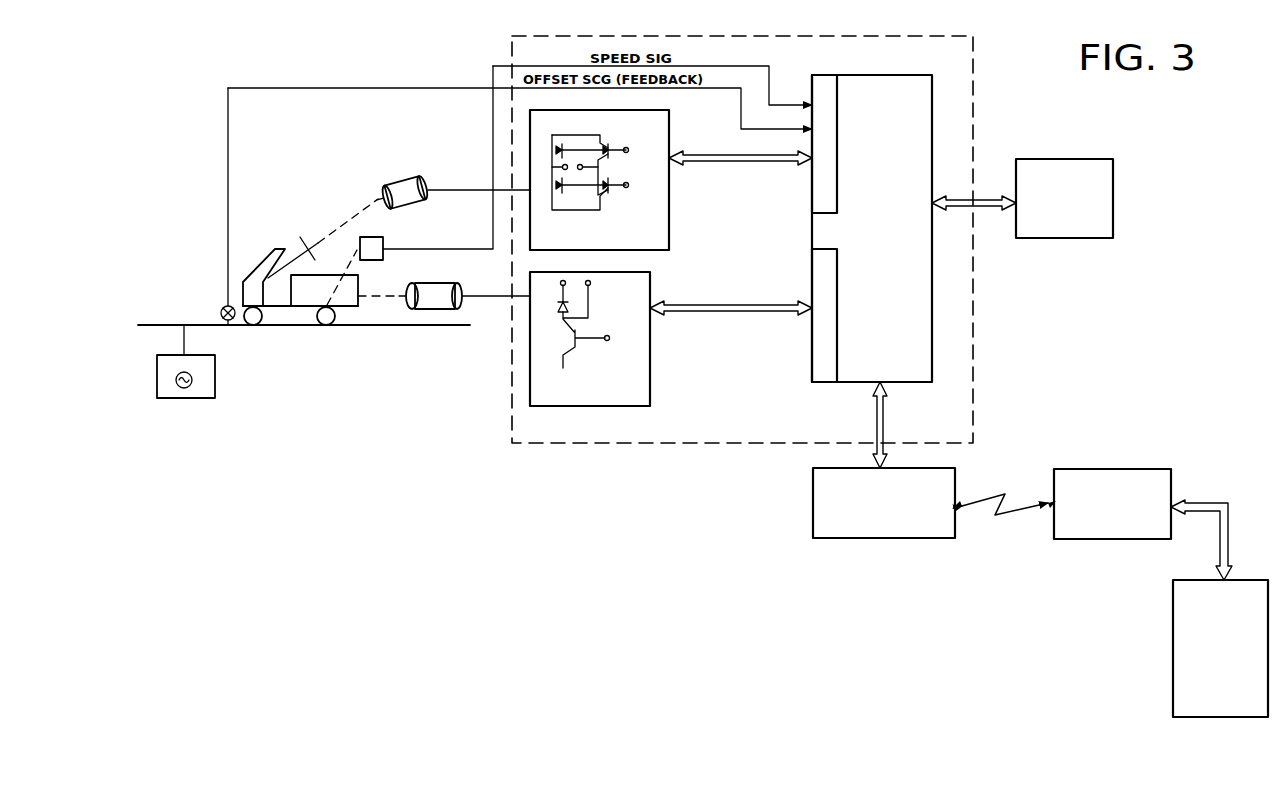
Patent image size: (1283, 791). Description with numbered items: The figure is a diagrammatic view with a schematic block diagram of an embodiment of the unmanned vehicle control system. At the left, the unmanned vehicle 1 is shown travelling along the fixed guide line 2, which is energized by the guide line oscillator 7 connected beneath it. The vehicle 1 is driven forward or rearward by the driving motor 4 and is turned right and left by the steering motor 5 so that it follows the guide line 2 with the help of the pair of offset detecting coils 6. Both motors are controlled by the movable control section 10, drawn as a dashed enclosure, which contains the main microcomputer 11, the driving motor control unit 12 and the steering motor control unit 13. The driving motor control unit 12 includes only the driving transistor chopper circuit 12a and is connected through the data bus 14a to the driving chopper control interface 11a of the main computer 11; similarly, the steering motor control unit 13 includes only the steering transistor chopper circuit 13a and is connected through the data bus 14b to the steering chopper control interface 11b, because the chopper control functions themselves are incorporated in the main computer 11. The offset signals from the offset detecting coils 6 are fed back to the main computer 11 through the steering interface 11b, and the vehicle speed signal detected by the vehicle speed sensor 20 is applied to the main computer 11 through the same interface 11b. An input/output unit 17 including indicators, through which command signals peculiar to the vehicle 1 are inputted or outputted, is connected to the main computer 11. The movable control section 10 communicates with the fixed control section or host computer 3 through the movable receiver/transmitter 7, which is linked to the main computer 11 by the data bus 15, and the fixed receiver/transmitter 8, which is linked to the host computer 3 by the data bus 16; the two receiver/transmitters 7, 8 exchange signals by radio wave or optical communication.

The unmanned vehicle 1 is at (268, 245).
The fixed guide line 2 is at (345, 327).
The fixed control section (host computer) 3 is at (1173, 611).
The driving motor 4 is at (445, 283).
The steering motor 5 is at (403, 180).
The offset detecting coils 6 is at (220, 308).
The movable receiver/transmitter 7 is at (180, 398).
The fixed receiver/transmitter 8 is at (1138, 468).
The movable control section 10 is at (852, 36).
The main microcomputer (CPU) 11 is at (858, 213).
The driving chopper control interface 11a is at (812, 350).
The steering chopper control interface 11b is at (812, 183).
The driving motor control unit 12 is at (617, 339).
The driving transistor chopper circuit 12a is at (569, 356).
The steering motor control unit 13 is at (621, 174).
The steering transistor chopper circuit 13a is at (597, 204).
The data bus 14a is at (702, 305).
The data bus 14b is at (725, 165).
The data bus 15 is at (885, 412).
The data bus 16 is at (1228, 500).
The input/output unit 17 is at (1095, 159).
The vehicle speed sensor 20 is at (383, 238).